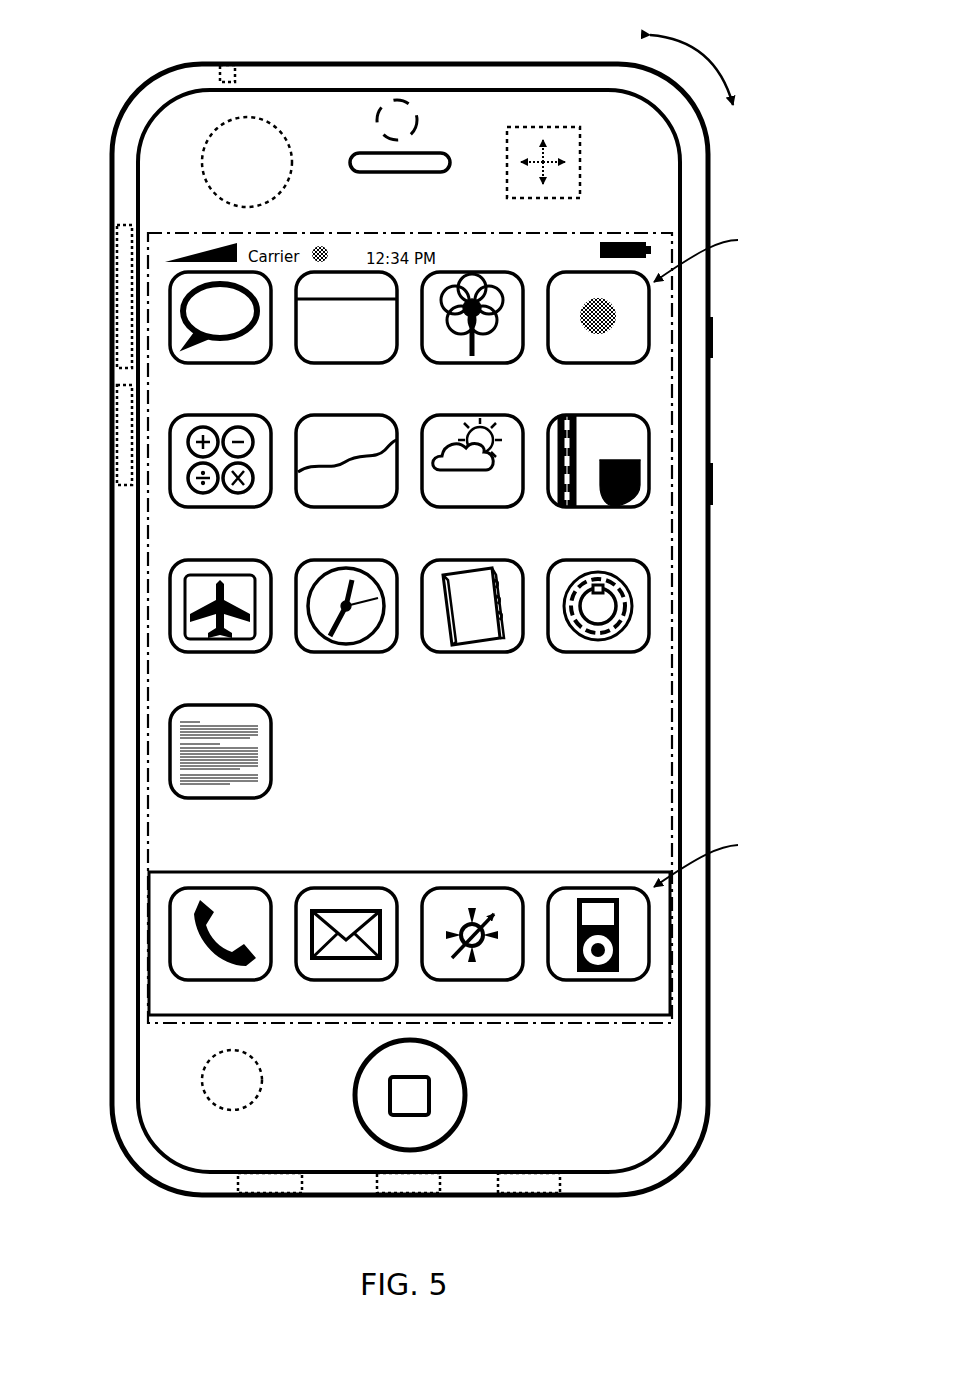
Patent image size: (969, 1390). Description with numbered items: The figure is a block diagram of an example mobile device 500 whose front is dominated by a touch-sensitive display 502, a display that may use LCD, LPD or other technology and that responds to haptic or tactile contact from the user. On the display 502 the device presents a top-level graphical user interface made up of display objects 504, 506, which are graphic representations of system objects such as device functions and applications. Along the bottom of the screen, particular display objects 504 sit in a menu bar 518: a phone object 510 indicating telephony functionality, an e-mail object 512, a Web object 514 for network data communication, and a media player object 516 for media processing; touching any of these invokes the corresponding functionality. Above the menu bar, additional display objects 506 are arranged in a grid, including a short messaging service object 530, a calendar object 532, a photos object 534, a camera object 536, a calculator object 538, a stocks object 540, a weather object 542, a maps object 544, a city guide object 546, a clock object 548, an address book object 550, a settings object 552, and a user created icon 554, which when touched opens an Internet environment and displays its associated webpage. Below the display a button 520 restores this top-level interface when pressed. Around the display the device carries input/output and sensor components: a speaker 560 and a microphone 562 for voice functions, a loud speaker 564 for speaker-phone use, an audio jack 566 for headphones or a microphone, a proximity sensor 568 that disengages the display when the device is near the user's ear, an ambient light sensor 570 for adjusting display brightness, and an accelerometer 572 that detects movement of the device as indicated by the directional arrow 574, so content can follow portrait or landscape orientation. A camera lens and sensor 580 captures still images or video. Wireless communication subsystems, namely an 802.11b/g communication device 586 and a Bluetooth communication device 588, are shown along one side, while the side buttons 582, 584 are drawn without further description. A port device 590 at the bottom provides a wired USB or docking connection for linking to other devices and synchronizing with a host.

The mobile device 500 is at (492, 63).
The touch-sensitive display 502 is at (600, 233).
The display objects 504 is at (464, 921).
The additional display objects 506 is at (716, 252).
The phone object 510 is at (228, 888).
The e-mail object 512 is at (348, 888).
The Web object 514 is at (475, 888).
The media player object 516 is at (600, 888).
The menu bar 518 is at (552, 1015).
The button 520 is at (466, 1094).
The short messaging service (SMS) object 530 is at (262, 363).
The calendar object 532 is at (388, 363).
The photos object 534 is at (514, 363).
The camera object 536 is at (644, 363).
The calculator object 538 is at (258, 507).
The stocks object 540 is at (384, 507).
The weather object 542 is at (510, 507).
The maps object 544 is at (644, 507).
The city guide object 546 is at (258, 652).
The clock object 548 is at (388, 652).
The address book object 550 is at (514, 652).
The settings object 552 is at (644, 652).
The user created icon 554 is at (271, 752).
The speaker 560 is at (378, 172).
The microphone 562 is at (302, 1183).
The loud speaker 564 is at (560, 1183).
The audio jack 566 is at (236, 73).
The proximity sensor 568 is at (202, 166).
The ambient light sensor 570 is at (252, 1103).
The accelerometer 572 is at (580, 165).
The directional arrow 574 is at (714, 62).
The camera lens and sensor 580 is at (416, 118).
The volume up button 582 is at (713, 336).
The volume down button 584 is at (713, 483).
The 802.11b/g communication device 586 is at (117, 228).
The Bluetooth communication device 588 is at (117, 387).
The port device 590 is at (440, 1183).